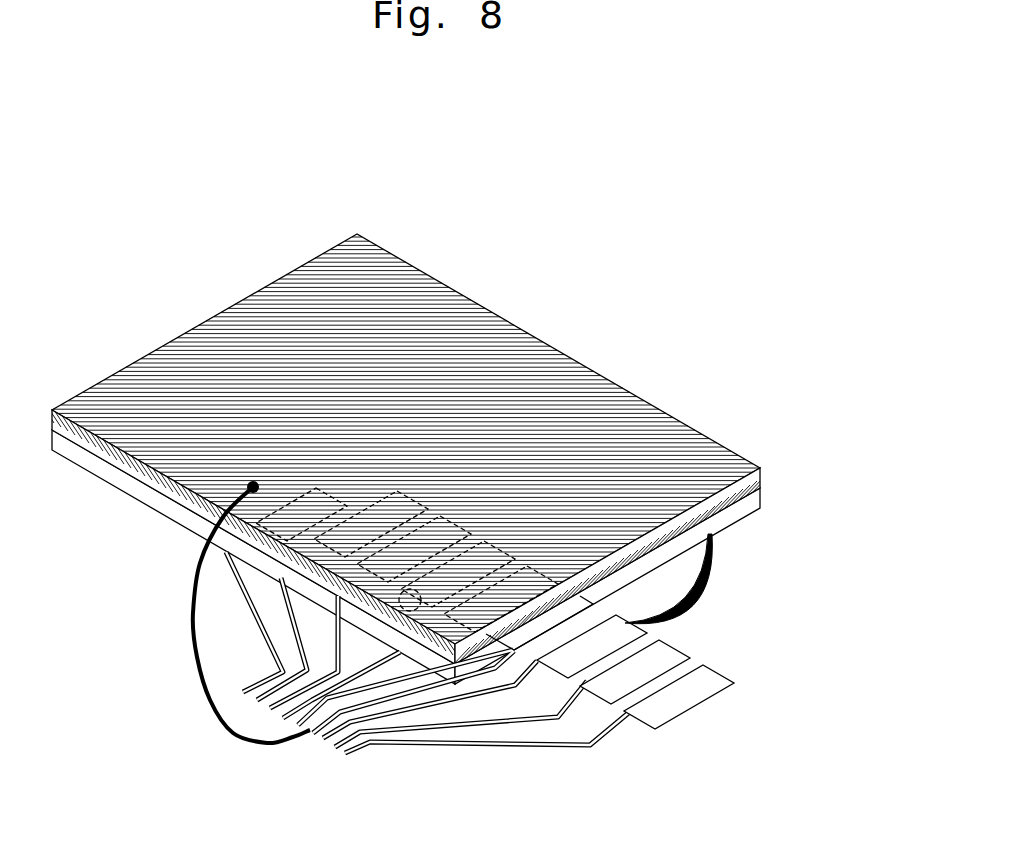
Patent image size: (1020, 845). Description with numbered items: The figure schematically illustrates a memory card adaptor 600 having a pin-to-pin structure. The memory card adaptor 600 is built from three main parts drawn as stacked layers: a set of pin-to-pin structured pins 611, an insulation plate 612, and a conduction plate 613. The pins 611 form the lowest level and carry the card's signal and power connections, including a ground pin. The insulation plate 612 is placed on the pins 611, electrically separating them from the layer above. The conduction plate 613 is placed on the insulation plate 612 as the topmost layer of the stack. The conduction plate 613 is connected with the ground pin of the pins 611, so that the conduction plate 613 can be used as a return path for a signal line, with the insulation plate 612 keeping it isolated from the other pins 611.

The memory card adaptor 600 is at (434, 462).
The pins 611 is at (700, 640).
The insulation plate 612 is at (756, 502).
The conduction plate 613 is at (762, 481).